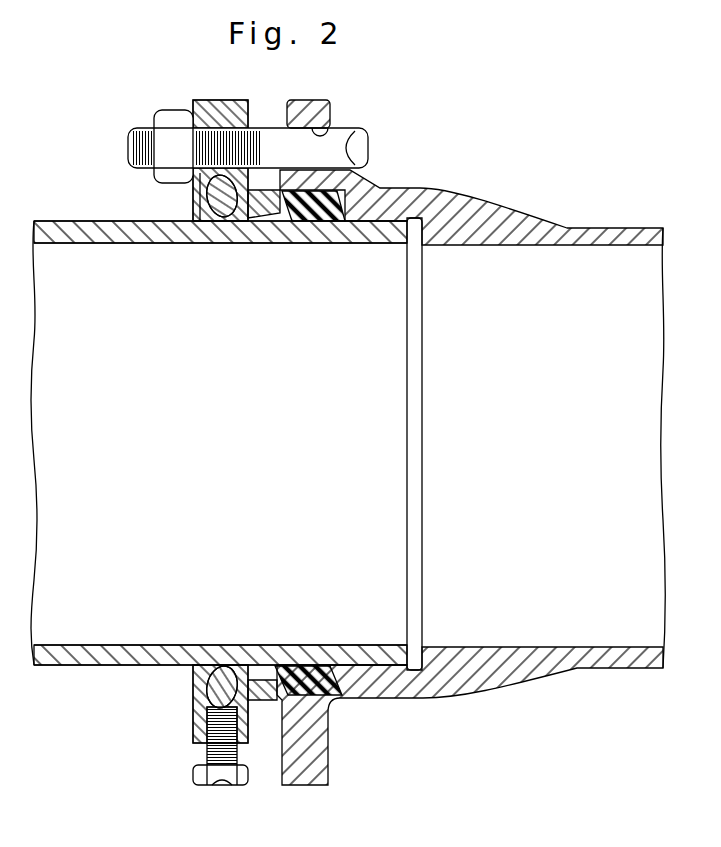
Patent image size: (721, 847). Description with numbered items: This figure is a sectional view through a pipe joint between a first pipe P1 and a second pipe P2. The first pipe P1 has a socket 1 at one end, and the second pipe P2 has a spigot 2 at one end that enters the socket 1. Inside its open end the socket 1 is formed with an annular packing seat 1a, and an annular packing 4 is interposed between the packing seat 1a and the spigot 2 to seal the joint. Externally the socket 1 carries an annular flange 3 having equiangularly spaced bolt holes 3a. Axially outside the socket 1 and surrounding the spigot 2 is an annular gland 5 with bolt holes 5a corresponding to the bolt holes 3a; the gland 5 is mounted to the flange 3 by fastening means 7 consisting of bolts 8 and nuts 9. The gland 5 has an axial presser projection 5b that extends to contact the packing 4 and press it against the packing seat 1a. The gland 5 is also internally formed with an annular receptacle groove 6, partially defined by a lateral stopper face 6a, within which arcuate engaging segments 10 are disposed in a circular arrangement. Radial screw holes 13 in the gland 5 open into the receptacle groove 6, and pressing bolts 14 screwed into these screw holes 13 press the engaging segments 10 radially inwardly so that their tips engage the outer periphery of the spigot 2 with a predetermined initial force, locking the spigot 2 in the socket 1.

The socket 1 is at (471, 463).
The annular packing seat 1a is at (350, 192).
The spigot 2 is at (376, 236).
The annular flange 3 is at (345, 97).
The bolt holes 3a is at (331, 126).
The annular packing 4 is at (298, 222).
The annular gland 5 is at (210, 379).
The bolt holes 5a is at (239, 137).
The axial presser projection 5b is at (258, 212).
The annular receptacle groove 6 is at (197, 184).
The lateral stopper face 6a is at (206, 221).
The fastening means 7 is at (135, 113).
The bolts 8 is at (130, 150).
The nuts 9 is at (170, 118).
The arcuate engaging segments 10 is at (227, 218).
The radial screw holes 13 is at (207, 734).
The pressing bolts 14 is at (222, 780).
The first pipe P1 is at (607, 246).
The second pipe P2 is at (60, 245).